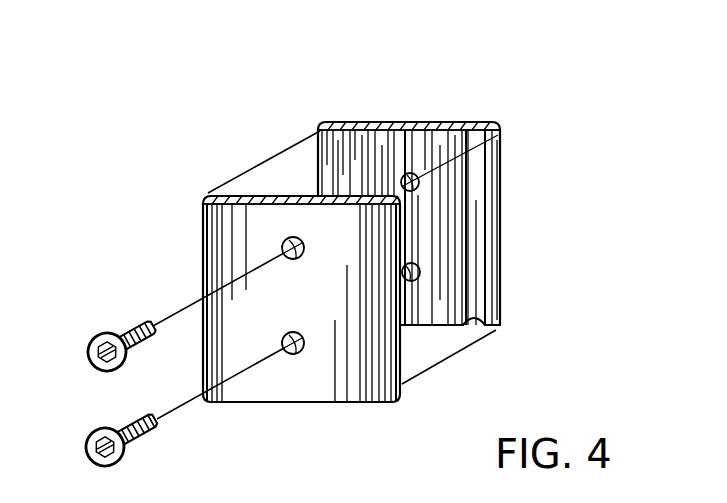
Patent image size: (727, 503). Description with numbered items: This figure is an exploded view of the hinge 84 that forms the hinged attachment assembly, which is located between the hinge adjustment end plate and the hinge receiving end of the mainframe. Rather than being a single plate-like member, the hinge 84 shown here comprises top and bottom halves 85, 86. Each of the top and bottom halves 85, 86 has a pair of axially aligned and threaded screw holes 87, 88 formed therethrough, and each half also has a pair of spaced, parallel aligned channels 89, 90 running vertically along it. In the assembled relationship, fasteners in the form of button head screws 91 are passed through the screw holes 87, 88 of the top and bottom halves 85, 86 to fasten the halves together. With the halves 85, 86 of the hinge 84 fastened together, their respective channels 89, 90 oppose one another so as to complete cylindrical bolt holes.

The hinge 84 is at (518, 189).
The top half 85 is at (268, 388).
The bottom half 86 is at (447, 130).
The screw hole 87 is at (303, 257).
The screw hole 88 is at (408, 173).
The channel 89 is at (353, 128).
The channel 90 is at (352, 199).
The button head screws 91 is at (103, 430).